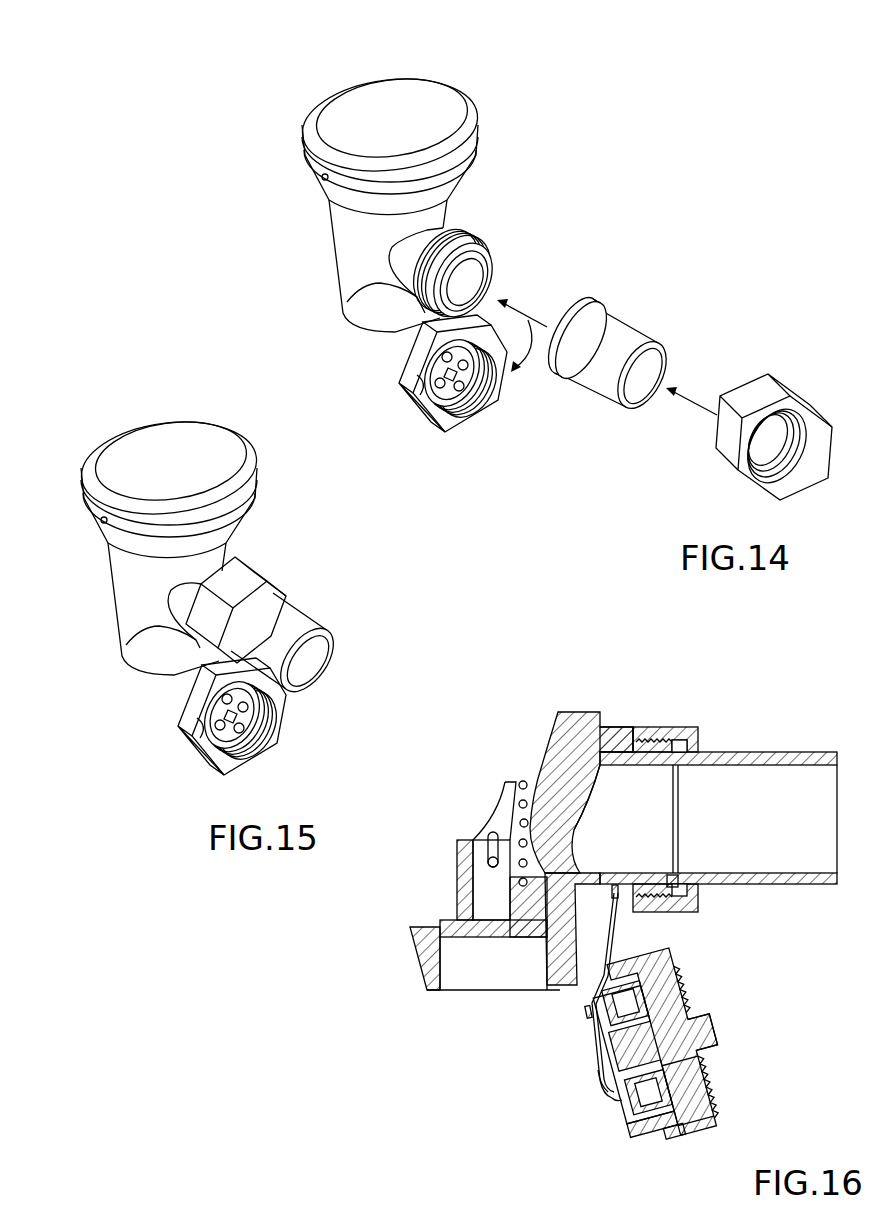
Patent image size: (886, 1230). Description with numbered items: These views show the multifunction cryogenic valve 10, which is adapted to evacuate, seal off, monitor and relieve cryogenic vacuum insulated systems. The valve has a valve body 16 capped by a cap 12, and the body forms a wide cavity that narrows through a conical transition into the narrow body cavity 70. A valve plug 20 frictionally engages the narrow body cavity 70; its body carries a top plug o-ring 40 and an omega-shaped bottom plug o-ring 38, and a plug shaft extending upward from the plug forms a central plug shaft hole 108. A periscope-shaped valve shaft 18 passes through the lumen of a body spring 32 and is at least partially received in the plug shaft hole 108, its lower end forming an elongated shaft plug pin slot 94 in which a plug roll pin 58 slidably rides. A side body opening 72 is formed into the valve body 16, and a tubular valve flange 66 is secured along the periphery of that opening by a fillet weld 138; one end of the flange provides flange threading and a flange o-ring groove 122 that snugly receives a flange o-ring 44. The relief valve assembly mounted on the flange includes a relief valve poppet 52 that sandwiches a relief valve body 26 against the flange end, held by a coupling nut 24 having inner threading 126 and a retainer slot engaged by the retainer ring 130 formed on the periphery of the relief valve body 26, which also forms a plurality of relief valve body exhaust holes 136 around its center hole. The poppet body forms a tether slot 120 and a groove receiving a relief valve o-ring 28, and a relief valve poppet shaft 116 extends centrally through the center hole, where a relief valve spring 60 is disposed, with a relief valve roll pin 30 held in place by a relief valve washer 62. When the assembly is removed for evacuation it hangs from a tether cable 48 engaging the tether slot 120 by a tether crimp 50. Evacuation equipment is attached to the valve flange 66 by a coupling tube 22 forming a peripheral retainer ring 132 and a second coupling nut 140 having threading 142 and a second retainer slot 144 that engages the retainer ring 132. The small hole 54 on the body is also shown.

In FIG. 14, the multifunction cryogenic valve 10 is at (493, 66).
In FIG. 15, the multifunction cryogenic valve 10 is at (189, 401).
In FIG. 14, the cap 12 is at (337, 104).
In FIG. 15, the cap 12 is at (140, 434).
In FIG. 14, the valve body 16 is at (337, 244).
In FIG. 15, the valve body 16 is at (117, 586).
In FIG. 16, the valve body 16 is at (420, 926).
In FIG. 16, the valve shaft 18 is at (506, 806).
In FIG. 16, the valve plug 20 is at (458, 900).
In FIG. 14, the coupling tube 22 is at (633, 332).
In FIG. 15, the coupling tube 22 is at (305, 622).
In FIG. 16, the coupling tube 22 is at (798, 752).
In FIG. 14, the coupling nut 24 is at (430, 426).
In FIG. 15, the coupling nut 24 is at (209, 765).
In FIG. 16, the coupling nut 24 is at (666, 954).
In FIG. 16, the relief valve body 26 is at (648, 1130).
In FIG. 16, the relief valve o-ring 28 is at (626, 1112).
In FIG. 14, the relief valve roll pin 30 is at (455, 424).
In FIG. 15, the relief valve roll pin 30 is at (236, 765).
In FIG. 16, the relief valve roll pin 30 is at (693, 1054).
In FIG. 16, the body spring 32 is at (525, 781).
In FIG. 16, the bottom plug o-ring 38 is at (417, 948).
In FIG. 16, the top plug o-ring 40 is at (559, 880).
In FIG. 14, the flange o-ring 44 is at (491, 267).
In FIG. 16, the flange o-ring 44 is at (671, 878).
In FIG. 16, the tether cable 48 is at (612, 916).
In FIG. 16, the tether crimp 50 is at (613, 886).
In FIG. 16, the relief valve poppet 52 is at (609, 1100).
In FIG. 14, the indicator hole 54 is at (323, 181).
In FIG. 15, the indicator hole 54 is at (102, 524).
In FIG. 16, the plug roll pin 58 is at (490, 859).
In FIG. 16, the relief valve spring 60 is at (660, 1096).
In FIG. 16, the relief valve washer 62 is at (648, 1005).
In FIG. 14, the valve flange 66 is at (410, 256).
In FIG. 15, the valve flange 66 is at (188, 600).
In FIG. 16, the valve flange 66 is at (610, 764).
In FIG. 16, the narrow body cavity 70 is at (462, 990).
In FIG. 16, the side body opening 72 is at (566, 812).
In FIG. 16, the shaft plug pin slot 94 is at (490, 840).
In FIG. 16, the plug shaft hole 108 is at (497, 918).
In FIG. 14, the relief valve poppet shaft 116 is at (486, 398).
In FIG. 15, the relief valve poppet shaft 116 is at (265, 737).
In FIG. 16, the relief valve poppet shaft 116 is at (703, 1034).
In FIG. 16, the tether slot 120 is at (600, 1088).
In FIG. 14, the flange o-ring groove 122 is at (468, 234).
In FIG. 16, the flange o-ring groove 122 is at (651, 732).
In FIG. 16, the inner threading 126 is at (682, 995).
In FIG. 16, the retainer ring 130 is at (670, 1135).
In FIG. 14, the peripheral retainer ring 132 is at (592, 302).
In FIG. 16, the peripheral retainer ring 132 is at (688, 752).
In FIG. 14, the relief valve body exhaust holes 136 is at (417, 375).
In FIG. 15, the relief valve body exhaust holes 136 is at (197, 718).
In FIG. 16, the relief valve body exhaust holes 136 is at (690, 1136).
In FIG. 14, the fillet weld 138 is at (347, 302).
In FIG. 15, the fillet weld 138 is at (126, 645).
In FIG. 14, the second coupling nut 140 is at (774, 386).
In FIG. 15, the second coupling nut 140 is at (260, 574).
In FIG. 16, the second coupling nut 140 is at (650, 727).
In FIG. 14, the threading 142 is at (784, 478).
In FIG. 16, the threading 142 is at (680, 912).
In FIG. 14, the second retainer slot 144 is at (800, 448).
In FIG. 16, the second retainer slot 144 is at (699, 896).